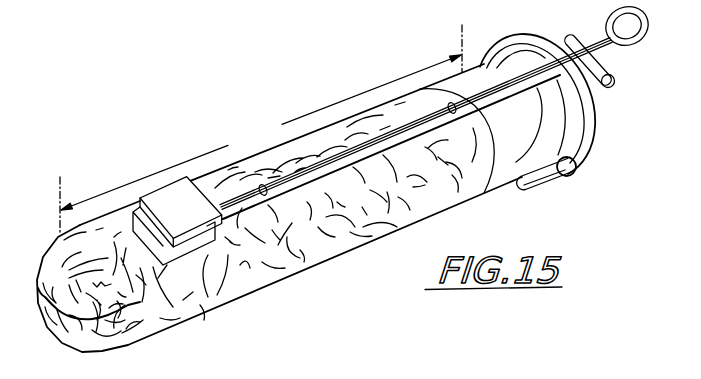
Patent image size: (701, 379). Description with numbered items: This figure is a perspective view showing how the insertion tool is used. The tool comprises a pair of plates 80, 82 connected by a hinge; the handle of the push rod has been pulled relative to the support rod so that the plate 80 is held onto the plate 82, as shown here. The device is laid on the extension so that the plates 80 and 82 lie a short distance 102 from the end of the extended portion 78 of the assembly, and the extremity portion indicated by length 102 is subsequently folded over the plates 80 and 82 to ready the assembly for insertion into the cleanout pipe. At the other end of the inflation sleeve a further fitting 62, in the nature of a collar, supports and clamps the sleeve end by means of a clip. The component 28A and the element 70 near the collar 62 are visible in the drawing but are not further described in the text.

The elongate tube 28A is at (103, 218).
The collar fitting 62 is at (589, 131).
The latch clip 70 is at (516, 168).
The extended portion 78 is at (261, 128).
The plate 80 is at (170, 196).
The plate 82 is at (214, 248).
The extremity portion length 102 is at (150, 336).